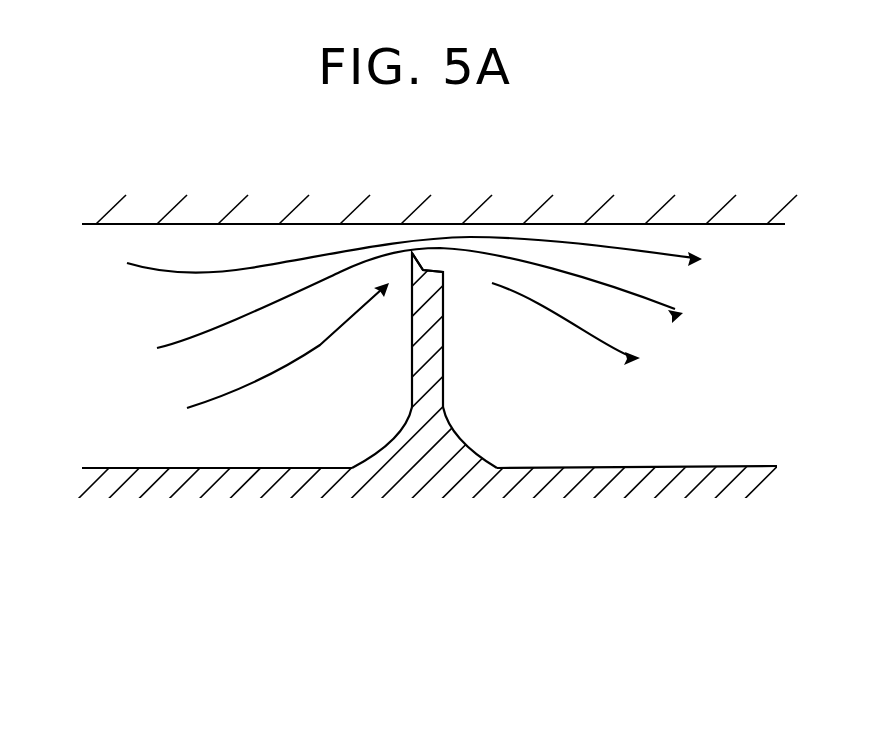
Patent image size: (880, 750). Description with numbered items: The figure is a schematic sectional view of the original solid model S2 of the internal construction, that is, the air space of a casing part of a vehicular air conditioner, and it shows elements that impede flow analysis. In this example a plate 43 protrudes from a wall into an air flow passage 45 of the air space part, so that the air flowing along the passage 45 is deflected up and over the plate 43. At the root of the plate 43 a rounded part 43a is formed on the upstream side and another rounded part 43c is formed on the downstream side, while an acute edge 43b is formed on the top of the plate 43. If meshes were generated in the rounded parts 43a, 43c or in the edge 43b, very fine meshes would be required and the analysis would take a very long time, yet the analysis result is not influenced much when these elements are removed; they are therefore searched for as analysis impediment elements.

The original solid model of internal construction S2 is at (642, 207).
The plate 43 is at (437, 360).
The rounded part 43a is at (407, 457).
The acute edge 43b is at (424, 268).
The rounded part 43c is at (452, 448).
The air flow passage 45 is at (123, 348).